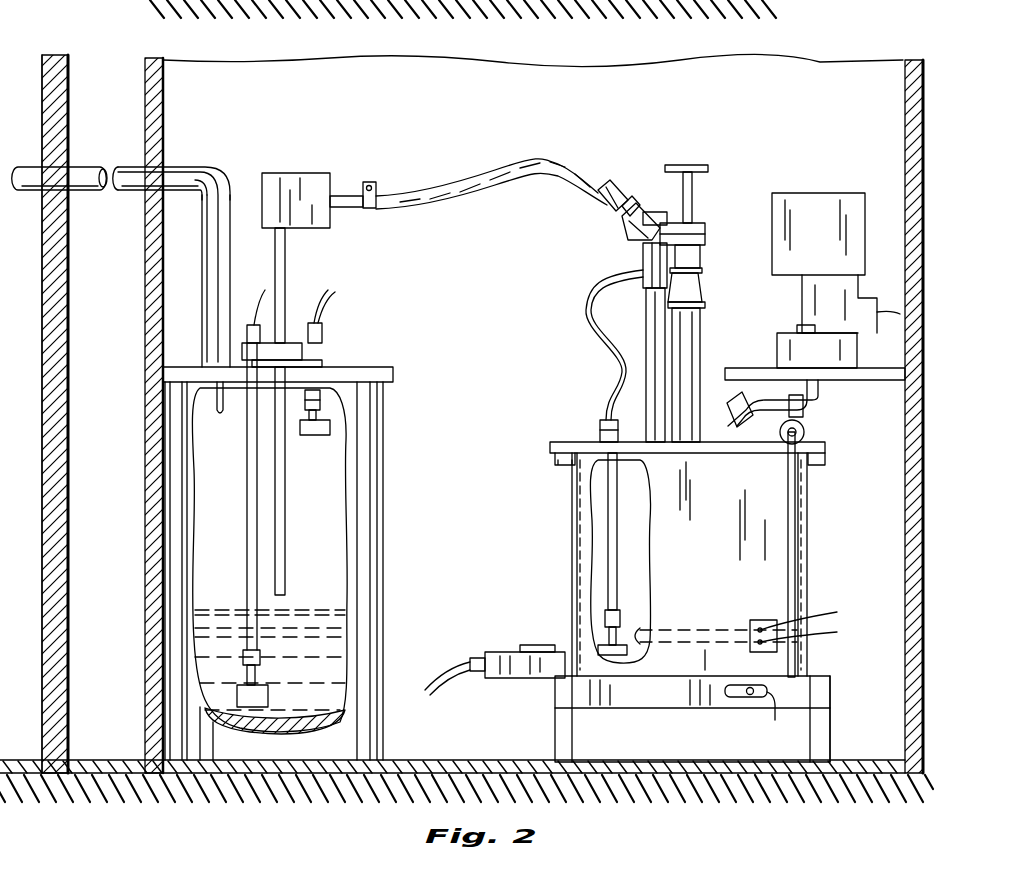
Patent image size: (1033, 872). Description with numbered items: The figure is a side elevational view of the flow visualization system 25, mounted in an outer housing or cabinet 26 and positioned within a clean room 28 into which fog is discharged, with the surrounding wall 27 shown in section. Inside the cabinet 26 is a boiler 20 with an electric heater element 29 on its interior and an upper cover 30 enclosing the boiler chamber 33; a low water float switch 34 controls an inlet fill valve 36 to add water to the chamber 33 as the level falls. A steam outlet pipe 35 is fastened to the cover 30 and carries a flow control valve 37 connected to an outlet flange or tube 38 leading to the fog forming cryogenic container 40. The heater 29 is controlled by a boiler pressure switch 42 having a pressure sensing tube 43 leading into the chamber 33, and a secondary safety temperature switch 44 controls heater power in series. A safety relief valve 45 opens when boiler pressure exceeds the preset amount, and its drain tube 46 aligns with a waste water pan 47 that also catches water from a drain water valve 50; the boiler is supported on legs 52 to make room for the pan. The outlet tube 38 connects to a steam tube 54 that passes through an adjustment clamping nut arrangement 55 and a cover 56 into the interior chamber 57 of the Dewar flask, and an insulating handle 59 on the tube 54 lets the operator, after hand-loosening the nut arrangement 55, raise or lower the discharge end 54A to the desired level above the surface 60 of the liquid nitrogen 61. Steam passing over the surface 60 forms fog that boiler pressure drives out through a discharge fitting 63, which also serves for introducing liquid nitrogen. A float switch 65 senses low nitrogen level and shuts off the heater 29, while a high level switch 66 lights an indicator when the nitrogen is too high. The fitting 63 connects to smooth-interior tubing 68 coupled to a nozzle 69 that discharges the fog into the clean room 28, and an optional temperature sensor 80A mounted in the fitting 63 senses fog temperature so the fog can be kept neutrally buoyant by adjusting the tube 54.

The boiler 20 is at (812, 510).
The flow visualization system 25 is at (550, 158).
The outer housing or cabinet 26 is at (290, 770).
The wall 27 is at (69, 95).
The clean room 28 is at (20, 75).
The heater element 29 is at (702, 634).
The upper cover 30 is at (712, 455).
The boiler chamber 33 is at (590, 534).
The low water float switch 34 is at (620, 605).
The steam outlet pipe 35 is at (703, 340).
The inlet fill valve 36 is at (642, 258).
The flow control valve 37 is at (705, 233).
The outlet flange or tube 38 is at (592, 178).
The fog forming cryogenic container 40 is at (388, 472).
The boiler pressure switch 42 is at (812, 192).
The pressure sensing tube 43 is at (774, 415).
The safety temperature switch 44 is at (522, 680).
The safety relief valve 45 is at (806, 430).
The drain tube 46 is at (800, 578).
The waste water pan 47 is at (703, 725).
The drain water valve 50 is at (753, 716).
The legs 52 is at (828, 746).
The steam tube 54 is at (287, 296).
The discharge end 54A is at (300, 594).
The adjustment clamping nut arrangement 55 is at (296, 340).
The cover 56 is at (375, 368).
The interior chamber 57 is at (332, 462).
The insulating handle 59 is at (300, 173).
The surface 60 is at (346, 607).
The liquid nitrogen 61 is at (336, 642).
The discharge fitting 63 is at (223, 412).
The float switch 65 is at (272, 698).
The high level switch 66 is at (322, 395).
The tubing 68 is at (208, 272).
The nozzle 69 is at (36, 190).
The temperature sensor 80A is at (214, 352).